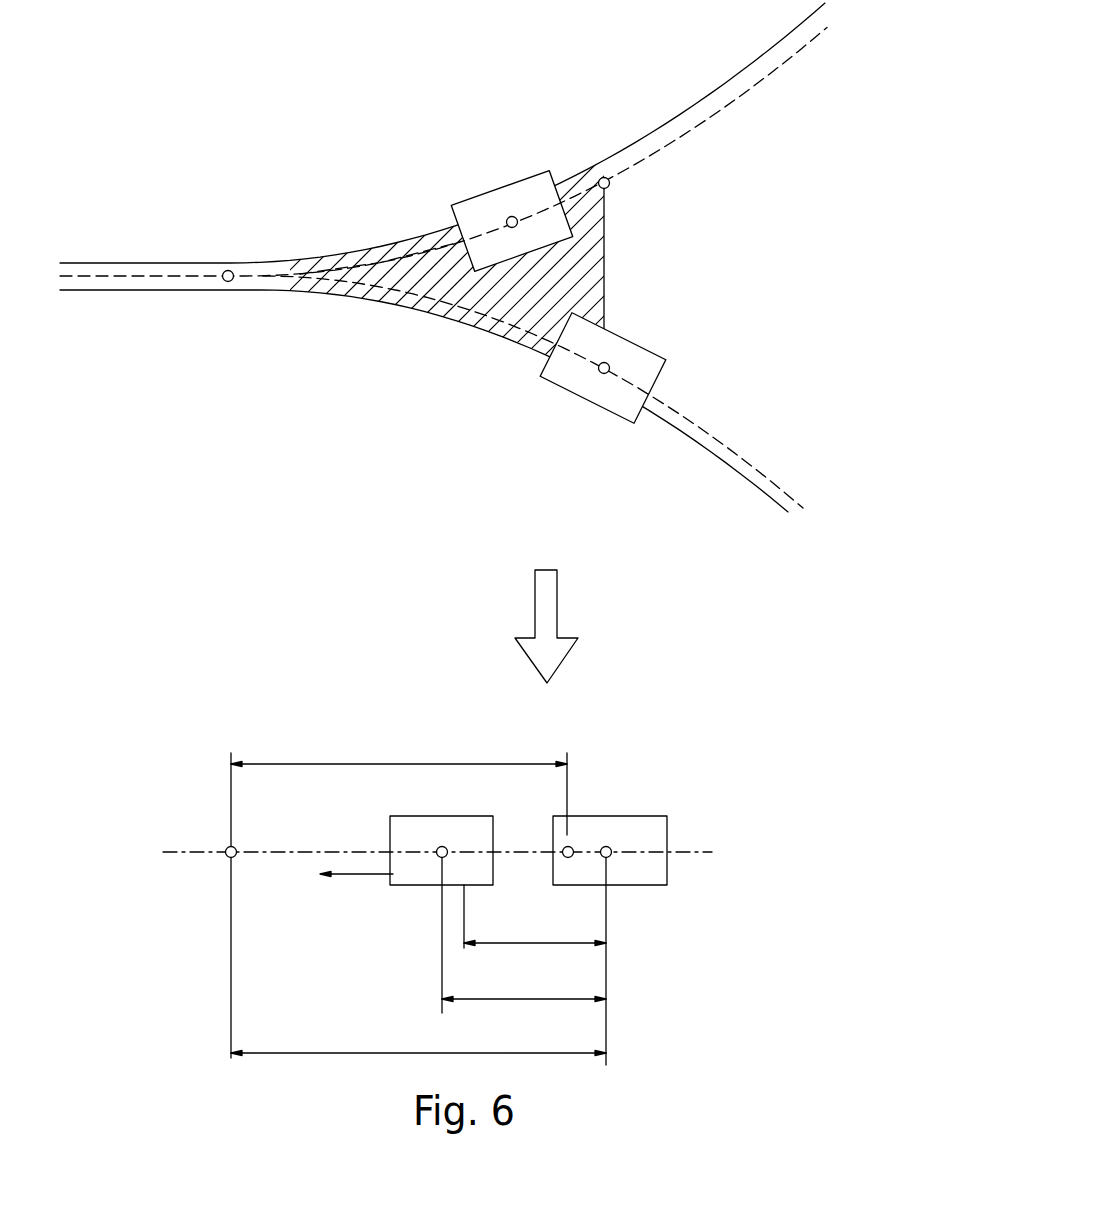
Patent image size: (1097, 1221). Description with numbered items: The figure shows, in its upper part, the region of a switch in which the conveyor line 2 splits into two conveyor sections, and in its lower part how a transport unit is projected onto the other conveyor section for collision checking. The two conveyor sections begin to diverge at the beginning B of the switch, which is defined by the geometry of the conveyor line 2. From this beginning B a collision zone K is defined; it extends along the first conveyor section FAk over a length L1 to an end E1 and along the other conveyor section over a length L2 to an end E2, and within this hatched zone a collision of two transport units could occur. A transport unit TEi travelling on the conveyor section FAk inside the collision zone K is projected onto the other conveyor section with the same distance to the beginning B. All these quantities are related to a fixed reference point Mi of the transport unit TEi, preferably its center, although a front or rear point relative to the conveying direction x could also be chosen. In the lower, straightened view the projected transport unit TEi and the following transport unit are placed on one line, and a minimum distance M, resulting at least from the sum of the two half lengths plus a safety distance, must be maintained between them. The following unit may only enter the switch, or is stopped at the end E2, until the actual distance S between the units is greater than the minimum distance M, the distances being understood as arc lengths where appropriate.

The conveyor section FAk is at (110, 262).
The conveyor line 2 is at (762, 72).
The beginning of the switch B is at (226, 269).
The collision zone K is at (547, 280).
The length L1 is at (375, 263).
The length L2 is at (452, 288).
The transport unit TEi is at (463, 206).
The reference point Mi is at (513, 215).
The end of the collision zone E1 is at (600, 177).
The end of the collision zone E2 is at (640, 908).
The minimum distance M is at (535, 916).
The actual distance S is at (524, 935).
The conveying direction x is at (346, 876).